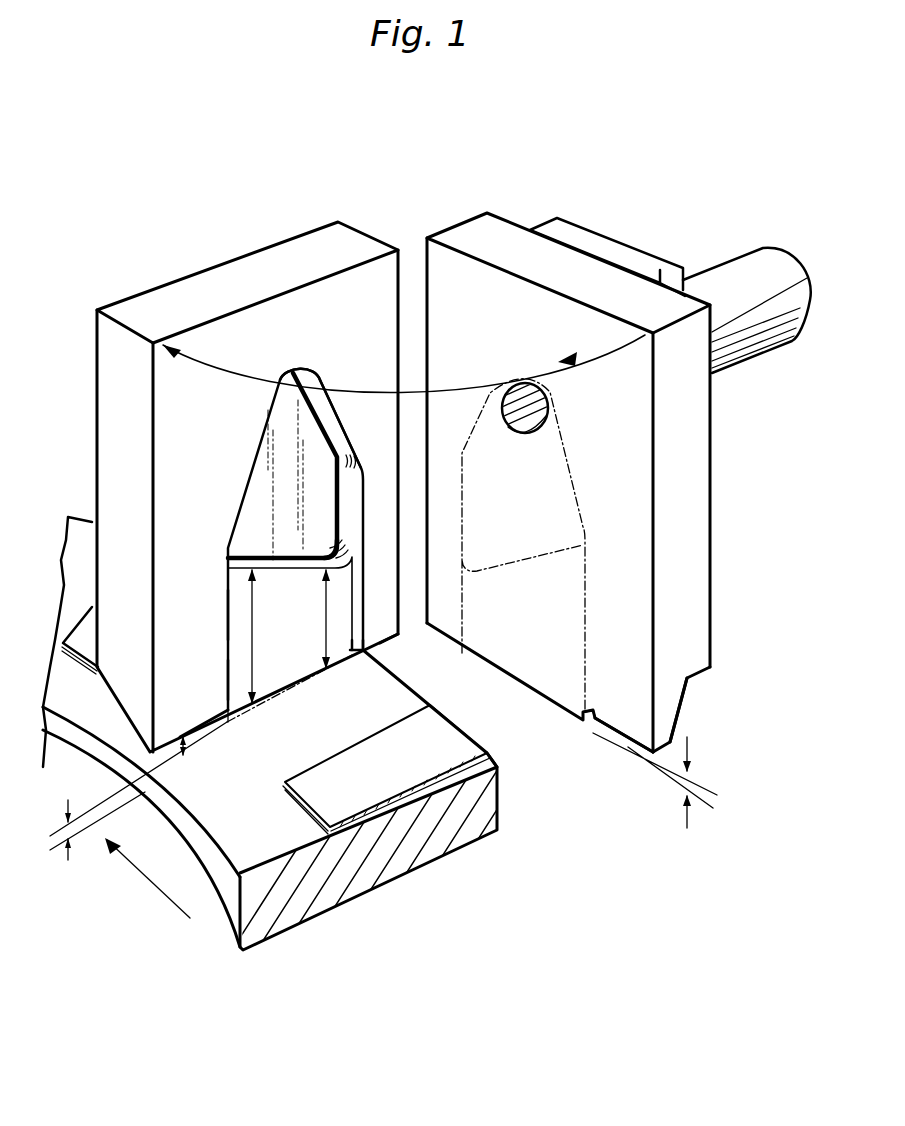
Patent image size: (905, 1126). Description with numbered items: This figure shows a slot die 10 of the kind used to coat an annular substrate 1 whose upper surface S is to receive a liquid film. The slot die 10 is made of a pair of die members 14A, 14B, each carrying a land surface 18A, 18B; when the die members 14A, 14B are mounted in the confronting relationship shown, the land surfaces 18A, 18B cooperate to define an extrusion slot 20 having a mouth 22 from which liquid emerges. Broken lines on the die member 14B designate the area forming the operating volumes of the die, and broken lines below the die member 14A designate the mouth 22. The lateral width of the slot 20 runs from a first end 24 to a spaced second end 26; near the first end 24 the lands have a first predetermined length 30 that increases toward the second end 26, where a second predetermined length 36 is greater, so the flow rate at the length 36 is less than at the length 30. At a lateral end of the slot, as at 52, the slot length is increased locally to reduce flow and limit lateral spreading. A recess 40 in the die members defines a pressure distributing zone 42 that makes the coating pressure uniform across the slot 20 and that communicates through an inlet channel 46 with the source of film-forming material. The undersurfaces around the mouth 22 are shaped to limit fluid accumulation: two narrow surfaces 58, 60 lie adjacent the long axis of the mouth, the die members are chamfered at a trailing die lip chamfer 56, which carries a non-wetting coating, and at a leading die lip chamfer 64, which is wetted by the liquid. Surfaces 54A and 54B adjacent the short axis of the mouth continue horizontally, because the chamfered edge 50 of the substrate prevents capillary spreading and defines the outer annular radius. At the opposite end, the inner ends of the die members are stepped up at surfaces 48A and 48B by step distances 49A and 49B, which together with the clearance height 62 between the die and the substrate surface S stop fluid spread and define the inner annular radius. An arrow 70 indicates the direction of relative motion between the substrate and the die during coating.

The annular substrate 1 is at (217, 907).
The slot die 10 is at (312, 160).
The die member 14A is at (225, 273).
The die member 14B is at (498, 238).
The land surface 18A is at (289, 636).
The land surface 18B is at (523, 545).
The extrusion slot 20 is at (280, 577).
The mouth 22 is at (275, 700).
The first end 24 is at (372, 640).
The second end 26 is at (230, 618).
The first predetermined length 30 is at (360, 664).
The second predetermined length 36 is at (250, 653).
The recess 40 is at (348, 480).
The pressure distributing zone 42 is at (283, 445).
The inlet channel 46 is at (525, 432).
The stepped surface 48A is at (200, 729).
The stepped surface 48B is at (628, 742).
The step distance 49A is at (183, 756).
The step distance 49B is at (687, 785).
The chamfered edge of substrate 50 is at (487, 755).
The lateral end of slot 52 is at (327, 560).
The horizontal surface 54A is at (397, 643).
The horizontal surface 54B is at (443, 633).
The trailing die lip chamfer 56 is at (123, 713).
The die lip surface 58 is at (222, 722).
The die lip surface 60 is at (587, 733).
The clearance height 62 is at (72, 832).
The leading die lip chamfer 64 is at (680, 727).
The arrow of relative motion 70 is at (163, 891).
The substrate surface S is at (353, 735).